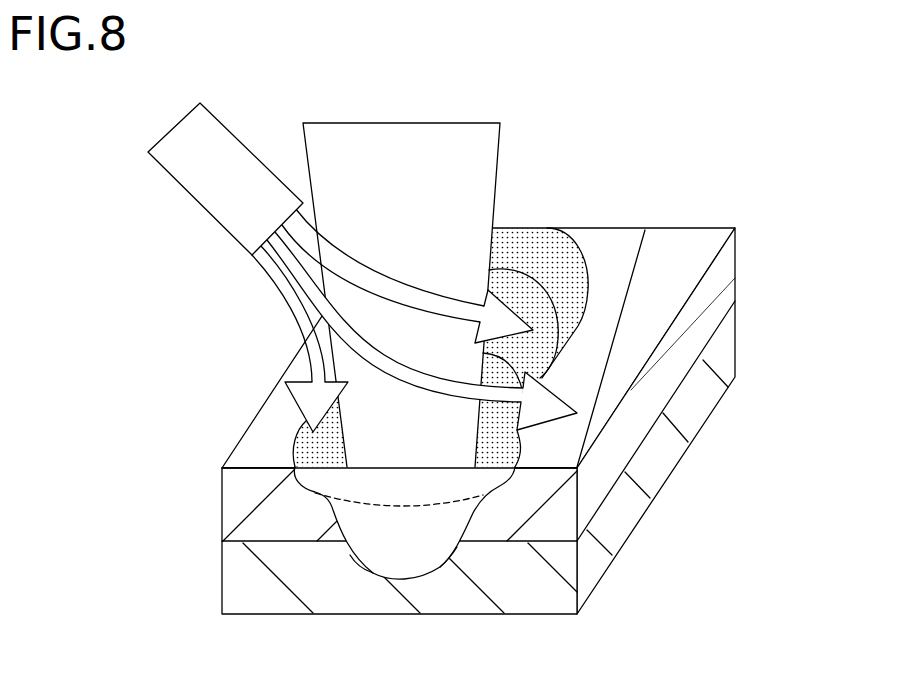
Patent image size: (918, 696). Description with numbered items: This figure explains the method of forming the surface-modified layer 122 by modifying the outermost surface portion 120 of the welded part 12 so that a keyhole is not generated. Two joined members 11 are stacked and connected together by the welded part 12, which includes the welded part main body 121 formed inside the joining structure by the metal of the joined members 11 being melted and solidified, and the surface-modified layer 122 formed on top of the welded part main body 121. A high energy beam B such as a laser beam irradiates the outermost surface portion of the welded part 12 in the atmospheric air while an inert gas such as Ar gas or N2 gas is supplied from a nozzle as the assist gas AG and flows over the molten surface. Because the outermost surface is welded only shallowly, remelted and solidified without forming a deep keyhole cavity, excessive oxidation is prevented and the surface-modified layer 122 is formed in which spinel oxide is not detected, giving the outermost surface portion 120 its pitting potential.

The joined members 11 is at (557, 505).
The welded part 12 is at (473, 522).
The outermost surface portion 120 is at (327, 452).
The welded part main body 121 is at (362, 543).
The surface-modified layer 122 is at (305, 476).
The assist gas AG is at (303, 287).
The high energy beam B is at (417, 137).